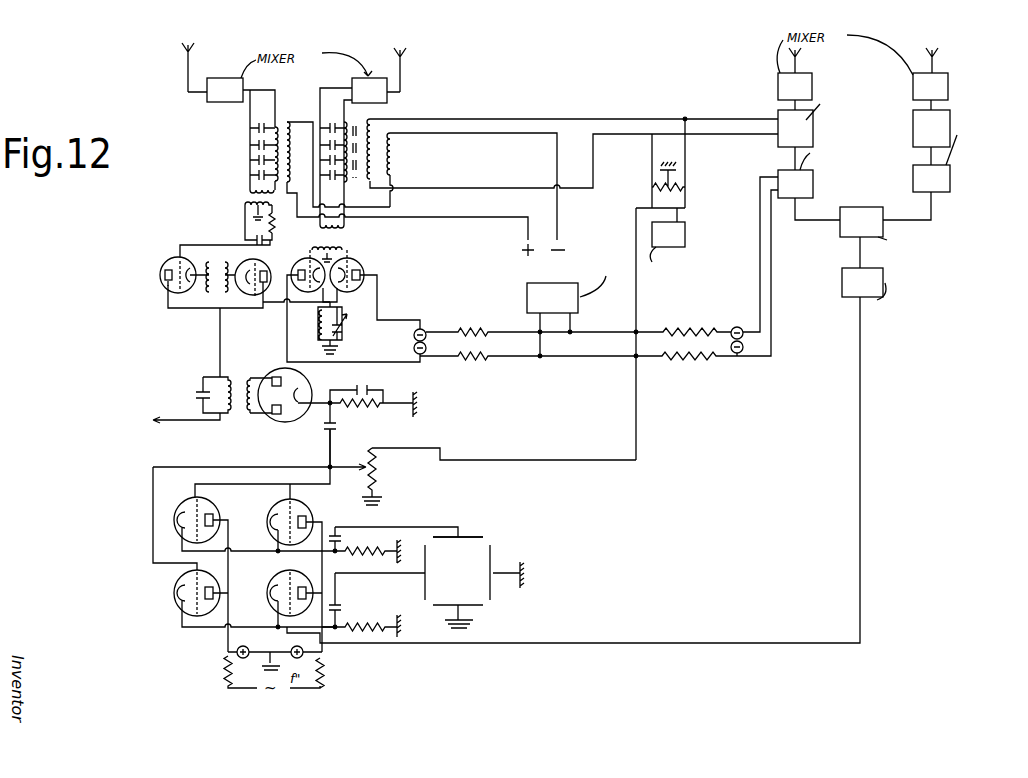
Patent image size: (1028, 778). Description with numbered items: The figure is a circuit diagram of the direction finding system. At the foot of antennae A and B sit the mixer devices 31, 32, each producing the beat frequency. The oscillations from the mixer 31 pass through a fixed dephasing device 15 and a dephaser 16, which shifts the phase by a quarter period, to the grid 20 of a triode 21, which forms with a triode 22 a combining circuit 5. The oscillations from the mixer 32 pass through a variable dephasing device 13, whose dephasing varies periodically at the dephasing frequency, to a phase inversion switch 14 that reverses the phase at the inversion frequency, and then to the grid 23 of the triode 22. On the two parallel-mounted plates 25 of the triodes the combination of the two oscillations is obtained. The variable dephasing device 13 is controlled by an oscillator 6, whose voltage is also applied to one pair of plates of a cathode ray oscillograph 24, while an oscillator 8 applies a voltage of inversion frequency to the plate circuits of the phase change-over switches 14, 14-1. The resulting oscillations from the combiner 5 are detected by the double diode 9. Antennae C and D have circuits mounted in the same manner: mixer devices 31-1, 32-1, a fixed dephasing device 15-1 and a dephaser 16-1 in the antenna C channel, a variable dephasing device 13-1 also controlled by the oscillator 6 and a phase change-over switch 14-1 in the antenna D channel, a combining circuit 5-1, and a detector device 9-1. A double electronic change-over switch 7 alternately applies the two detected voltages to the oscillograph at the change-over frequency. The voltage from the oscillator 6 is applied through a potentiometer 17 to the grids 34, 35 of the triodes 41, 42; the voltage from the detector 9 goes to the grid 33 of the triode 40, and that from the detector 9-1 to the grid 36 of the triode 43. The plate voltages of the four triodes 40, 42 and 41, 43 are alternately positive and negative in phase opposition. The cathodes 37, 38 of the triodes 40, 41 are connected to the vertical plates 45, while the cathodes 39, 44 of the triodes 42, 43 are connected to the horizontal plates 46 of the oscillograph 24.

The combining circuit 5 is at (215, 268).
The oscillator 6 is at (680, 288).
The double electronic change-over switch 7 is at (242, 512).
The oscillator 8 is at (558, 301).
The double diode 9 is at (304, 384).
The variable dephasing device 13 is at (316, 150).
The phase inversion switch 14 is at (344, 252).
The fixed dephasing device 15 is at (250, 156).
The dephaser 16 is at (245, 226).
The potentiometer 17 is at (394, 476).
The grid 20 is at (172, 262).
The triode 21 is at (165, 281).
The triode 22 is at (253, 298).
The grid 23 is at (262, 268).
The cathode ray oscillograph 24 is at (474, 572).
The plates 25 is at (168, 286).
The mixer device 31 is at (212, 82).
The mixer device 32 is at (387, 75).
The grid 33 is at (211, 565).
The grid 34 is at (303, 561).
The grid 35 is at (188, 612).
The grid 36 is at (279, 606).
The cathode 37 is at (153, 530).
The cathode 38 is at (277, 538).
The cathode 39 is at (181, 600).
The triode 40 is at (190, 498).
The triode 41 is at (277, 513).
The triode 42 is at (180, 586).
The triode 43 is at (310, 584).
The cathode 44 is at (274, 590).
The vertical plates 45 is at (460, 540).
The horizontal plates 46 is at (426, 573).
The mixer device 32-1 is at (798, 74).
The variable dephasing device 13-1 is at (832, 123).
The phase change-over switch 14-1 is at (828, 172).
The mixer device 31-1 is at (931, 74).
The fixed dephasing device 15-1 is at (931, 123).
The dephaser 16-1 is at (967, 160).
The combining circuit 5-1 is at (876, 230).
The detector device 9-1 is at (890, 276).